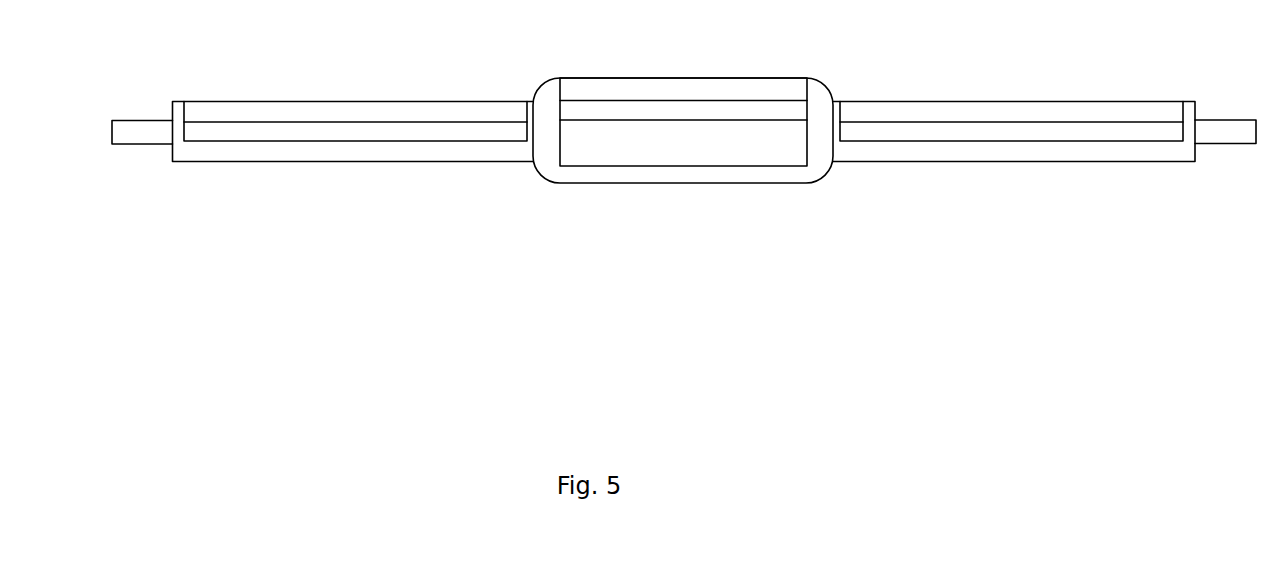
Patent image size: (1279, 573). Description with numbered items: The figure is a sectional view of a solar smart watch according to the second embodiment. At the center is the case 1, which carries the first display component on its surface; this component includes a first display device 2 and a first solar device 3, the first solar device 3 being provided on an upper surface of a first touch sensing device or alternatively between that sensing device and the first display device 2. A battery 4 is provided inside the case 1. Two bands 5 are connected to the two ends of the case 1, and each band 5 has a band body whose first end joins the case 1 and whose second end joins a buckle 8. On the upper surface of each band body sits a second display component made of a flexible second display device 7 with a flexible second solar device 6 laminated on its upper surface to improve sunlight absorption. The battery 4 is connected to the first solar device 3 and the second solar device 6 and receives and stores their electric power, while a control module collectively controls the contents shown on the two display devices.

The case 1 is at (812, 120).
The first display device 2 is at (724, 117).
The first solar device 3 is at (628, 95).
The battery 4 is at (685, 143).
The band 5 is at (353, 150).
The second solar device 6 is at (352, 118).
The second display device 7 is at (424, 134).
The buckle 8 is at (150, 135).